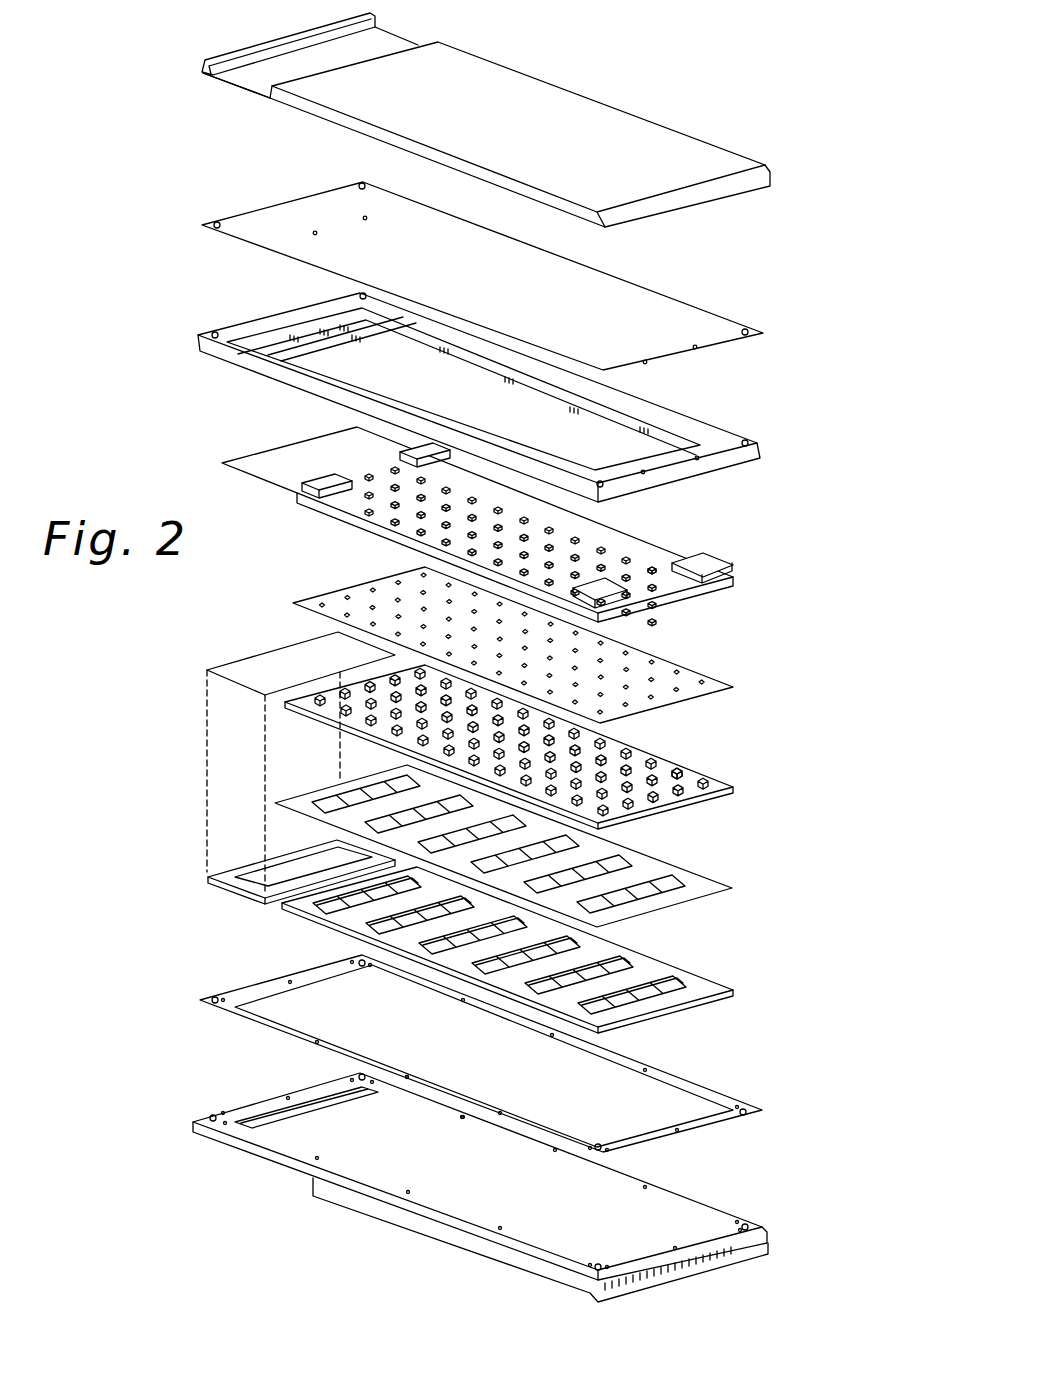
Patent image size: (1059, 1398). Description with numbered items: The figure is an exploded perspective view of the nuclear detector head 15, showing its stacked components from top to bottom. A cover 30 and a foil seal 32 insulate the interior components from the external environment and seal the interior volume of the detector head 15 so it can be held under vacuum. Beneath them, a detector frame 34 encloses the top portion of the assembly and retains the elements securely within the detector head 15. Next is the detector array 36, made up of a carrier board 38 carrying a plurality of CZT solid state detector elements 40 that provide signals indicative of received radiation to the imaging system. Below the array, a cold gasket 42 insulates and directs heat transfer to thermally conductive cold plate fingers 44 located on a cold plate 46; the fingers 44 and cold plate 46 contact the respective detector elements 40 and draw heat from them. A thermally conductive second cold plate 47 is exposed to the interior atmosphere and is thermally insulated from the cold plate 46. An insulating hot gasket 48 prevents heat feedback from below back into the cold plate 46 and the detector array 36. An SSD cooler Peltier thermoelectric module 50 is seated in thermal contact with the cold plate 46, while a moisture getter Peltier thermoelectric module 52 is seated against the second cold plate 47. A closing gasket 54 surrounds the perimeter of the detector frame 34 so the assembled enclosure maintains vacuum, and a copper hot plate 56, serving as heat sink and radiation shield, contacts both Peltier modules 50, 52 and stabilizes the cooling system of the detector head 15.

The detector head 15 is at (833, 97).
The cover 30 is at (723, 153).
The foil seal 32 is at (719, 312).
The detector frame 34 is at (765, 450).
The detector array 36 is at (706, 534).
The carrier board 38 is at (716, 588).
The CZT solid state detector element 40 is at (652, 572).
The cold gasket 42 is at (717, 669).
The cold plate finger 44 is at (680, 771).
The cold plate 46 is at (680, 810).
The second cold plate 47 is at (262, 663).
The hot gasket 48 is at (668, 912).
The SSD cooler Peltier thermoelectric module 50 is at (697, 1006).
The moisture getter Peltier thermoelectric module 52 is at (240, 870).
The closing gasket 54 is at (722, 1099).
The hot plate 56 is at (770, 1240).